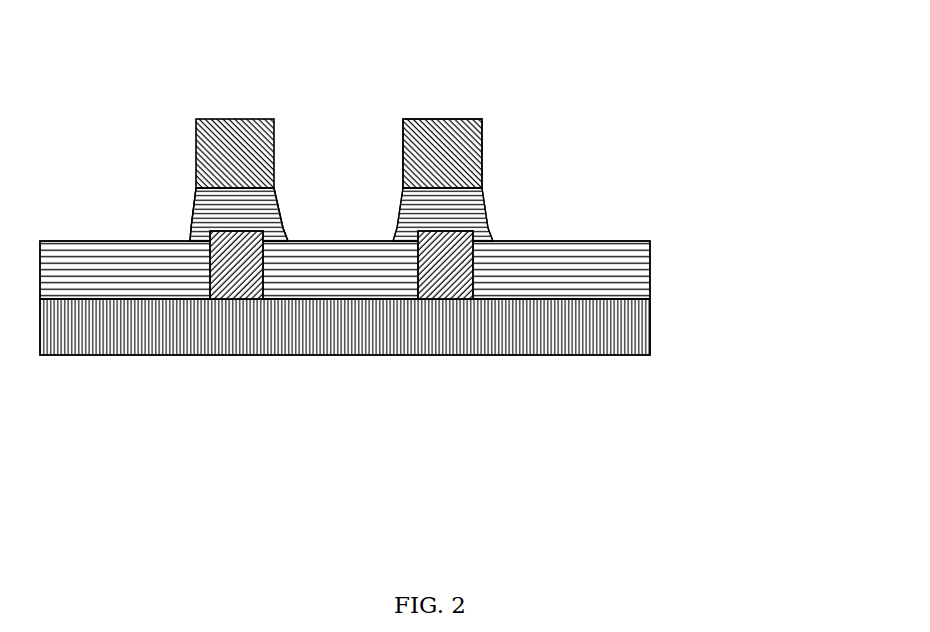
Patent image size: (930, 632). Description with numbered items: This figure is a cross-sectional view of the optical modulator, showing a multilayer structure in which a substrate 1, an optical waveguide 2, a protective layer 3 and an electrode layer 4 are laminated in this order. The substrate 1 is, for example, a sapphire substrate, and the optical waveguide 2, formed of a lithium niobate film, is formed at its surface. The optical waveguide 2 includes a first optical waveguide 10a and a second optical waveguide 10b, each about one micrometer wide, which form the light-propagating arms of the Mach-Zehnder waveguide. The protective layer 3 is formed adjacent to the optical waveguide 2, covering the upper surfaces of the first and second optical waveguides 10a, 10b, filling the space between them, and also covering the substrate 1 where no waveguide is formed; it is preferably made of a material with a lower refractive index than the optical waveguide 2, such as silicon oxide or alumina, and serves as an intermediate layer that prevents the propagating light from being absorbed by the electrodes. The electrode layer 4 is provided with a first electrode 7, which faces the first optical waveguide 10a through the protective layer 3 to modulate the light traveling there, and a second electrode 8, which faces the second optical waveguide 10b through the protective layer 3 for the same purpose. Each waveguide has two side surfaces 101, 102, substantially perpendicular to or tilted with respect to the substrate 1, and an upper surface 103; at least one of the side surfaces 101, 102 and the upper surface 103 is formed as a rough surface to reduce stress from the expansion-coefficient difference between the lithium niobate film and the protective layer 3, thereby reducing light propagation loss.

The substrate 1 is at (652, 330).
The optical waveguide 2 is at (475, 262).
The protective layer 3 is at (487, 210).
The electrode layer 4 is at (482, 128).
The first electrode 7 is at (238, 143).
The second electrode 8 is at (452, 153).
The first optical waveguide 10a is at (223, 250).
The second optical waveguide 10b is at (440, 250).
The side surface 101 is at (190, 227).
The side surface 102 is at (288, 238).
The upper surface 103 is at (195, 187).